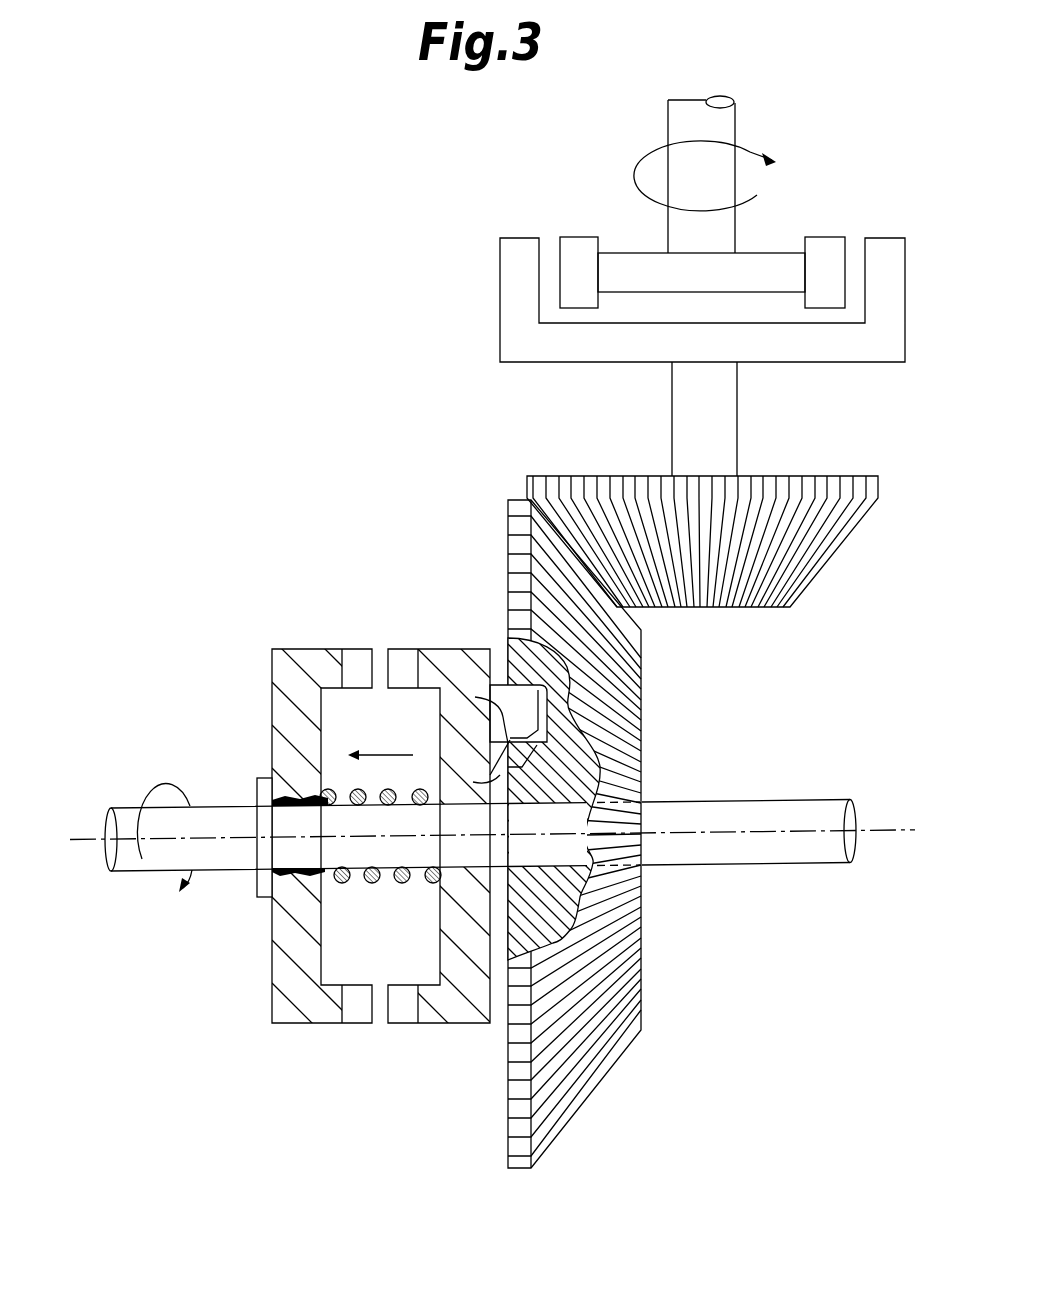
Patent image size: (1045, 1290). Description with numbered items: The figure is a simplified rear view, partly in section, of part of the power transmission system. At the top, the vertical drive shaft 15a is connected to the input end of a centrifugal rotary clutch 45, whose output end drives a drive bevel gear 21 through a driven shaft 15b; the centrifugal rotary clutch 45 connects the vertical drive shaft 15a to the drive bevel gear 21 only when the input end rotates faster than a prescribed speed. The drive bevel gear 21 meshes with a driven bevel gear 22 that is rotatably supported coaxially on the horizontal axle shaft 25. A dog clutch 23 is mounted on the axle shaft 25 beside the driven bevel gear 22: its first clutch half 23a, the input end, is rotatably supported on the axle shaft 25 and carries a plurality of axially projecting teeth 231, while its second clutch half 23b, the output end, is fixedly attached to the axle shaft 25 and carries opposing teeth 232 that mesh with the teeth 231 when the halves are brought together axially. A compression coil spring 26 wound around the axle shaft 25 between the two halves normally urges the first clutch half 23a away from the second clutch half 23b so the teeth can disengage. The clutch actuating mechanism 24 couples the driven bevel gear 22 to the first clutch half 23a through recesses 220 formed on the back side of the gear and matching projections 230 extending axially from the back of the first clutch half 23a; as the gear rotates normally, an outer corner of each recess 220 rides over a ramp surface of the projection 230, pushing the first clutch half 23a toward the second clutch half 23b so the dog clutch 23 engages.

The vertical drive shaft 15a is at (725, 127).
The driven shaft 15b is at (722, 410).
The centrifugal rotary clutch 45 is at (858, 232).
The drive bevel gear 21 is at (833, 555).
The driven bevel gear 22 is at (611, 834).
The recess 220 is at (537, 748).
The projection 230 is at (527, 703).
The clutch actuating mechanism 24 is at (568, 666).
The dog clutch 23 is at (381, 839).
The first clutch half 23a is at (436, 647).
The second clutch half 23b is at (300, 647).
The teeth 231 is at (404, 680).
The teeth 232 is at (360, 676).
The axle shaft 25 is at (233, 860).
The compression coil spring 26 is at (402, 884).